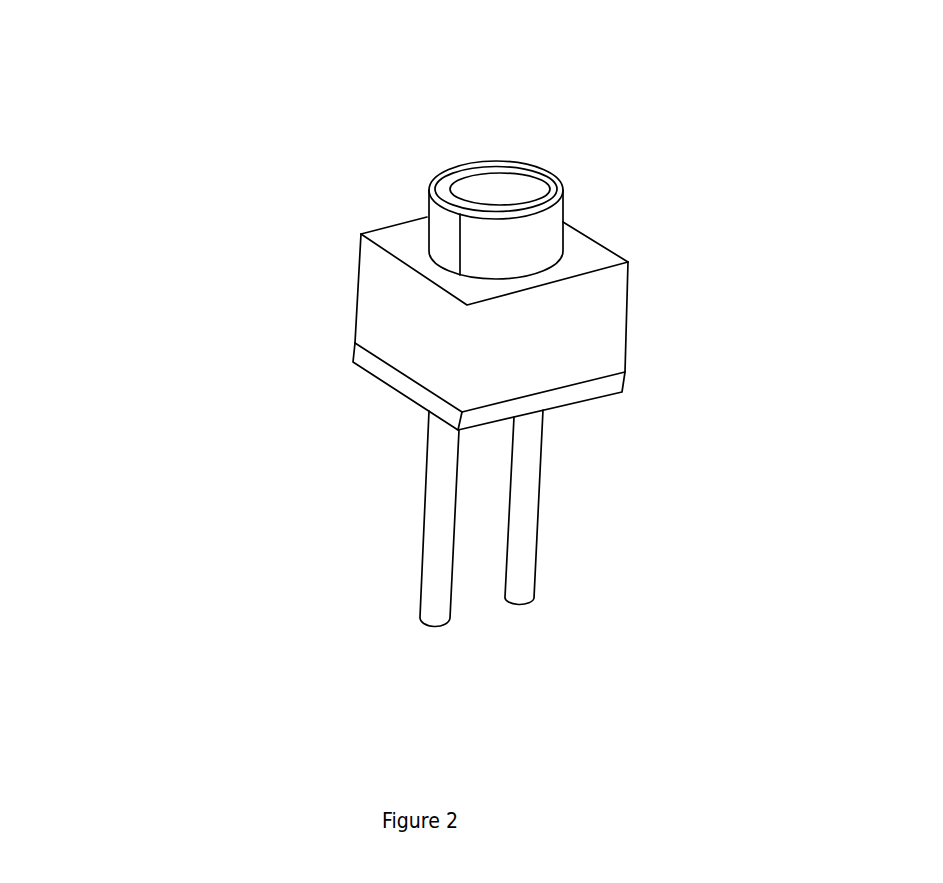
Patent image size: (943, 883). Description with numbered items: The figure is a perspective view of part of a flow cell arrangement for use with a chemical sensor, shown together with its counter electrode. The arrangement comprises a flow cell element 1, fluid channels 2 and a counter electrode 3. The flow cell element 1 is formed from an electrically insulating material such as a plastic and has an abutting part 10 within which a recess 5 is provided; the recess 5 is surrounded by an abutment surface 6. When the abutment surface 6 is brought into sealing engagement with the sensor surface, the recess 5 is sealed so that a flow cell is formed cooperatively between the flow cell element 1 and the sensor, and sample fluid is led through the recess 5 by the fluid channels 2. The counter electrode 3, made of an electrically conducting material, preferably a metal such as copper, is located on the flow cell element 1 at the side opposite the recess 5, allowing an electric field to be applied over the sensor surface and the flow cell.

The flow cell element 1 is at (425, 318).
The fluid channels 2 is at (518, 560).
The counter electrode 3 is at (383, 372).
The recess 5 is at (497, 188).
The abutment surface 6 is at (560, 187).
The abutting part 10 is at (507, 243).